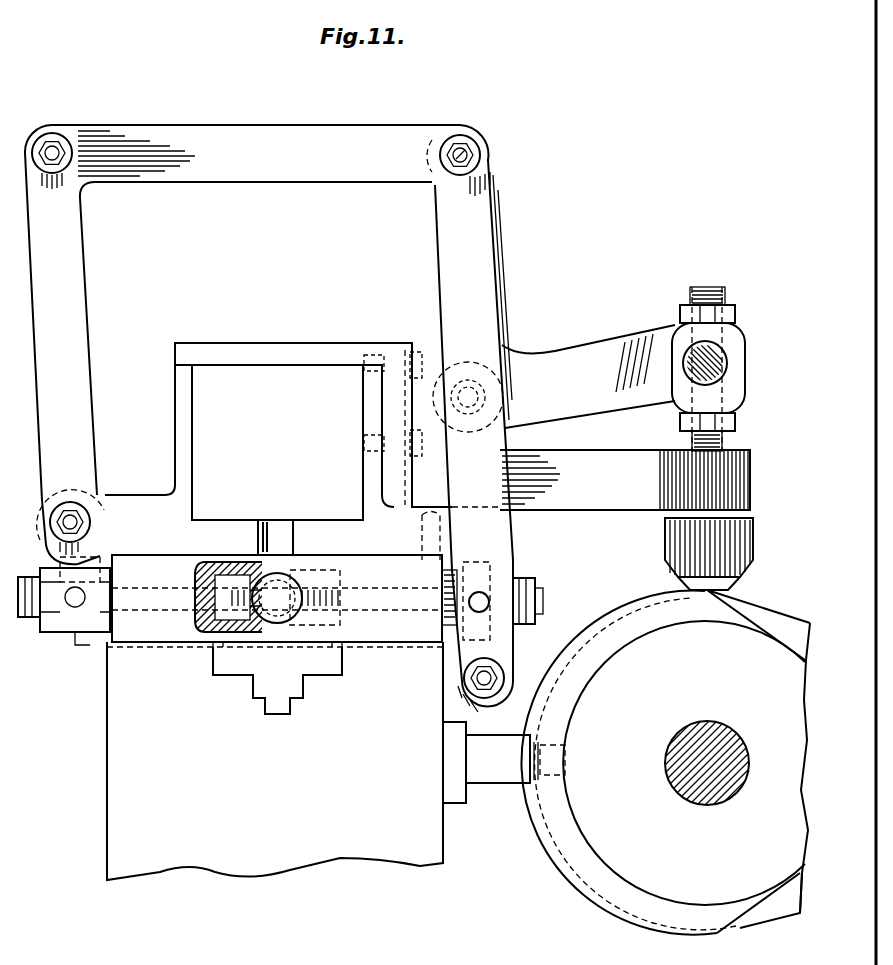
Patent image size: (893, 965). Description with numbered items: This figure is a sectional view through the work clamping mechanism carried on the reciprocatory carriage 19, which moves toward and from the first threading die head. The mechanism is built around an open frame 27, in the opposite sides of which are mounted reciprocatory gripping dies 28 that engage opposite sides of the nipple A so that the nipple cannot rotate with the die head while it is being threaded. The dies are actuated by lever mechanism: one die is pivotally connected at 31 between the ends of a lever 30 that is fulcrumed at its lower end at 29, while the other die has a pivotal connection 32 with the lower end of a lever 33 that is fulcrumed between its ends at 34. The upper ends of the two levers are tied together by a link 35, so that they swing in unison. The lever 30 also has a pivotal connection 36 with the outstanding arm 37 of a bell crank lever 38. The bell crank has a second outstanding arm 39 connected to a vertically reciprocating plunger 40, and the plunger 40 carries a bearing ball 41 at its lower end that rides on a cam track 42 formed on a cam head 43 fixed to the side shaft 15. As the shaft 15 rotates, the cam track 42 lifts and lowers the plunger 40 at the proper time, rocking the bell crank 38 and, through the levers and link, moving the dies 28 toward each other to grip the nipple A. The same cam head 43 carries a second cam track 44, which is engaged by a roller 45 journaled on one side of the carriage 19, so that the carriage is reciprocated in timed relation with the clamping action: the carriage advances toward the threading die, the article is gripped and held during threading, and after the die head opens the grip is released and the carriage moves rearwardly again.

The side shaft 15 is at (680, 753).
The reciprocatory carriage 19 is at (122, 712).
The open frame 27 is at (316, 532).
The gripping dies 28 is at (310, 627).
The fulcrum 29 is at (497, 685).
The lever 30 is at (492, 527).
The pivotal connection 31 is at (490, 612).
The pivotal connection 32 is at (62, 614).
The lever 33 is at (78, 352).
The fulcrum 34 is at (60, 522).
The link 35 is at (210, 132).
The pivotal connection 36 is at (470, 150).
The outstanding arm 37 is at (500, 248).
The bell crank lever 38 is at (508, 350).
The outstanding arm 39 is at (656, 346).
The plunger 40 is at (725, 428).
The bearing ball 41 is at (705, 583).
The cam track 42 is at (640, 625).
The cam head 43 is at (608, 843).
The cam track 44 is at (794, 620).
The roller 45 is at (556, 782).
The nipple A is at (277, 598).